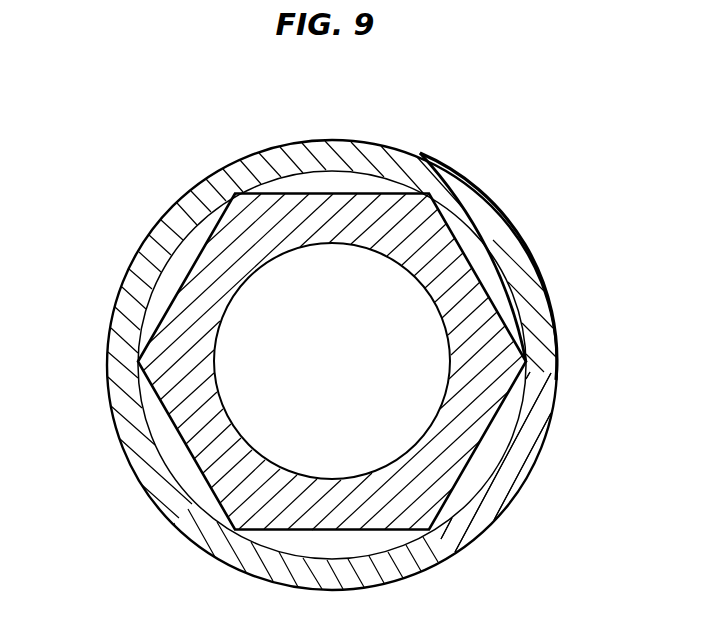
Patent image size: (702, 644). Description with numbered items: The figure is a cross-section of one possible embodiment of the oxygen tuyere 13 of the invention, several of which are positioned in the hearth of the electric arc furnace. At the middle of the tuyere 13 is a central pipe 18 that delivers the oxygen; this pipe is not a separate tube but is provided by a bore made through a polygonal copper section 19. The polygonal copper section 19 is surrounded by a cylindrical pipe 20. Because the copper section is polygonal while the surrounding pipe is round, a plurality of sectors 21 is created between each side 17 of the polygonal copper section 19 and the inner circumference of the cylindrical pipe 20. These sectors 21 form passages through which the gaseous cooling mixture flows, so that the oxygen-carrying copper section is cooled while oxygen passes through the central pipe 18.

The oxygen tuyere 13 is at (497, 178).
The side 17 is at (487, 432).
The central pipe 18 is at (400, 326).
The polygonal copper section 19 is at (303, 217).
The cylindrical pipe 20 is at (410, 170).
The sector 21 is at (185, 252).